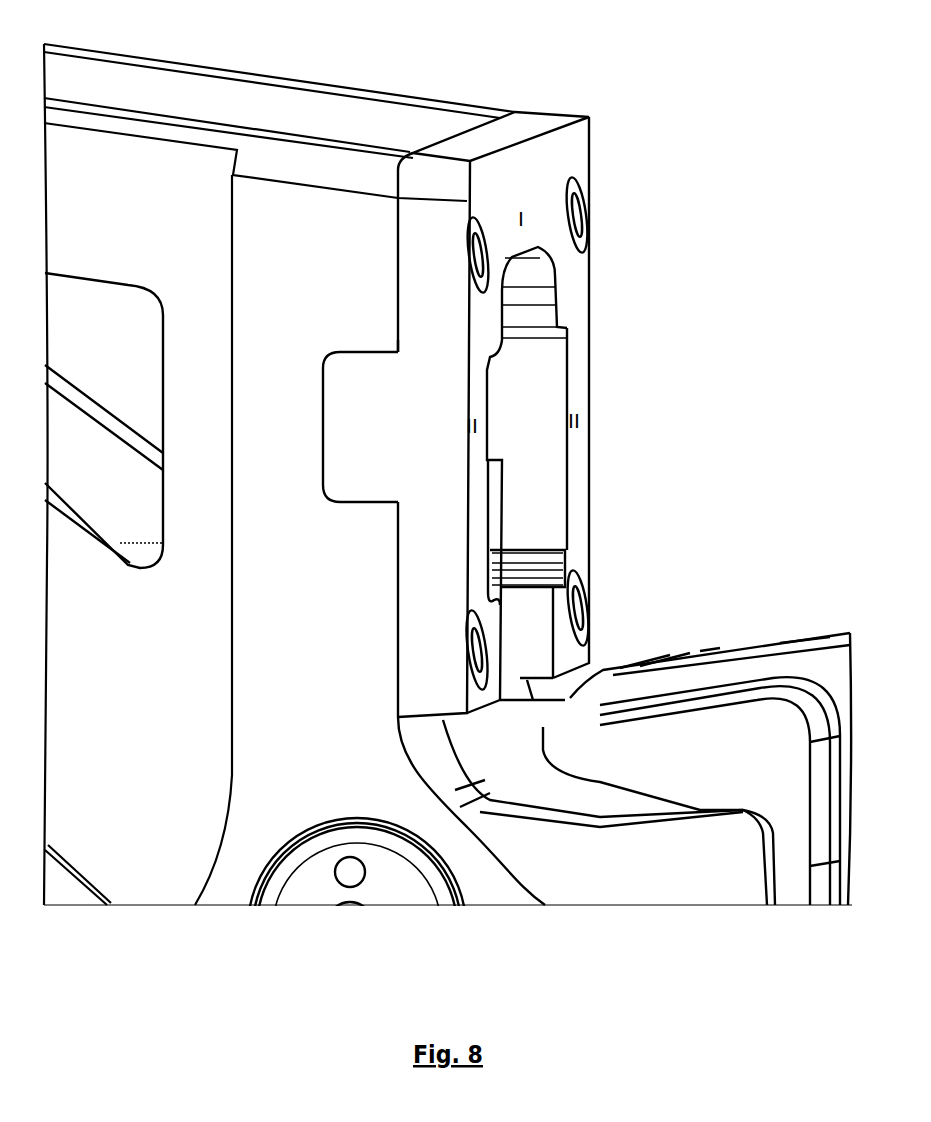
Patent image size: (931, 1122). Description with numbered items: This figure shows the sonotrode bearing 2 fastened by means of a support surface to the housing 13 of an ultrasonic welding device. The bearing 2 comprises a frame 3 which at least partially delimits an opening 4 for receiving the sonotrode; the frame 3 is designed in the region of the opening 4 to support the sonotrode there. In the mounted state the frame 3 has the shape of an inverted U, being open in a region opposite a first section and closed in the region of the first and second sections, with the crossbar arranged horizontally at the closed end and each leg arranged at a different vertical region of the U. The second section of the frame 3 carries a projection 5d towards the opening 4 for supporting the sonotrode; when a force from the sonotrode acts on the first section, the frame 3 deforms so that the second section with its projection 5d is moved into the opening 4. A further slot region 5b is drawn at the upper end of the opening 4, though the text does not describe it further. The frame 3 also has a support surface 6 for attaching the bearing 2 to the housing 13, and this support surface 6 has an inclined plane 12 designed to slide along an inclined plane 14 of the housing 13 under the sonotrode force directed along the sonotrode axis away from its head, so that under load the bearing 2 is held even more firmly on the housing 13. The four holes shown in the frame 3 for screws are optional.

The sonotrode bearing 2 is at (528, 110).
The frame 3 is at (528, 415).
The opening 4 is at (527, 514).
The arched slot section 5b is at (563, 313).
The projection 5d is at (523, 565).
The support surface 6 is at (322, 427).
The inclined plane 12 is at (368, 356).
The housing 13 is at (279, 474).
The inclined plane 14 is at (368, 350).